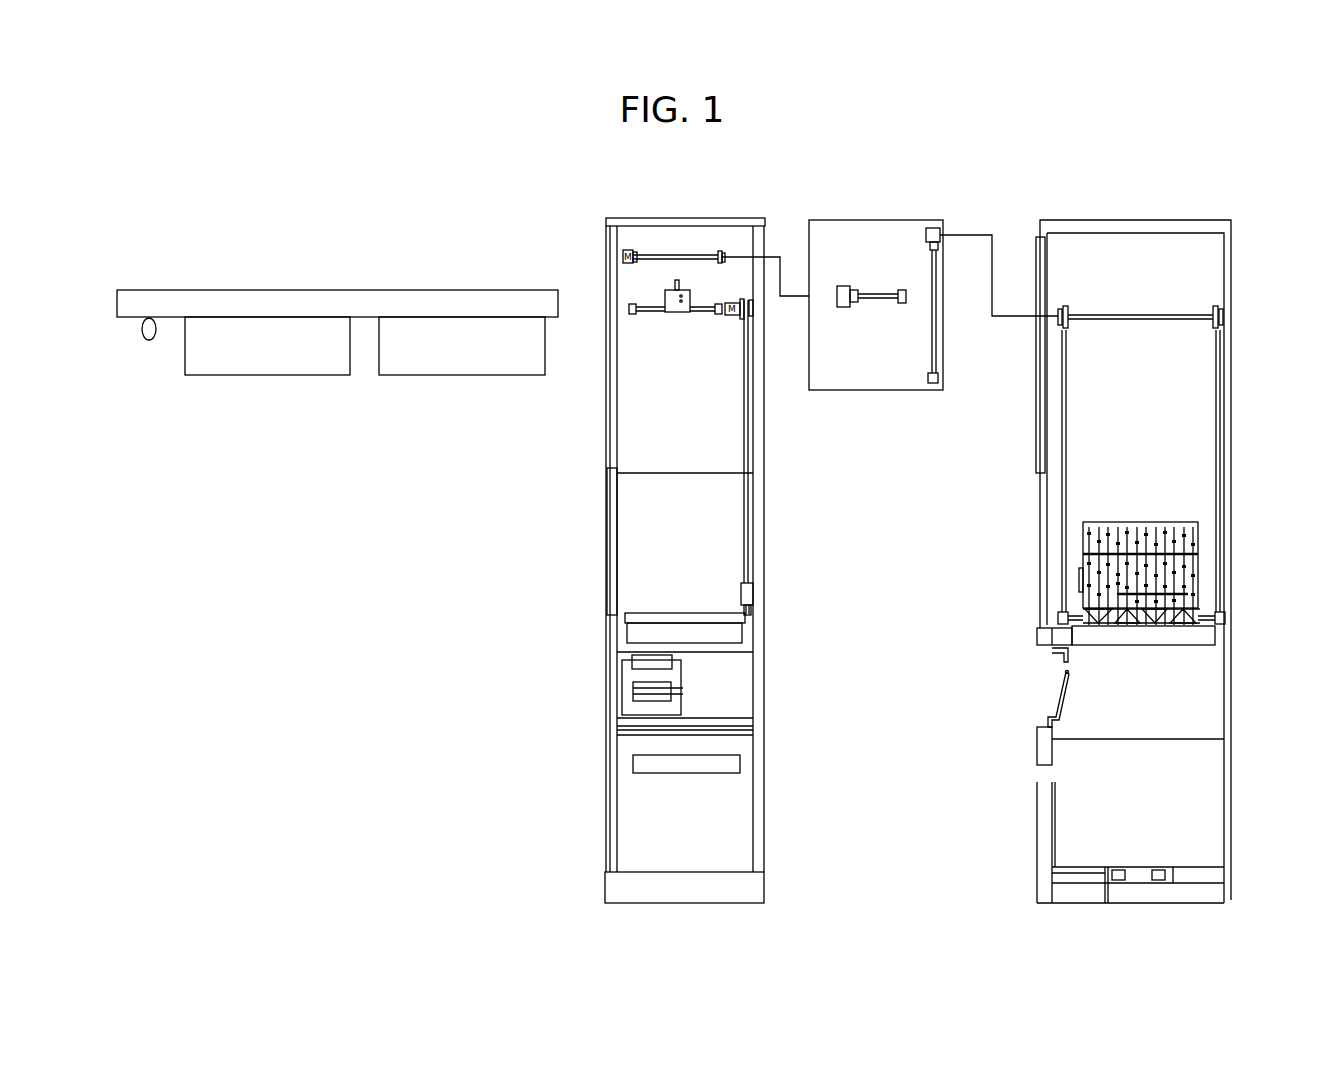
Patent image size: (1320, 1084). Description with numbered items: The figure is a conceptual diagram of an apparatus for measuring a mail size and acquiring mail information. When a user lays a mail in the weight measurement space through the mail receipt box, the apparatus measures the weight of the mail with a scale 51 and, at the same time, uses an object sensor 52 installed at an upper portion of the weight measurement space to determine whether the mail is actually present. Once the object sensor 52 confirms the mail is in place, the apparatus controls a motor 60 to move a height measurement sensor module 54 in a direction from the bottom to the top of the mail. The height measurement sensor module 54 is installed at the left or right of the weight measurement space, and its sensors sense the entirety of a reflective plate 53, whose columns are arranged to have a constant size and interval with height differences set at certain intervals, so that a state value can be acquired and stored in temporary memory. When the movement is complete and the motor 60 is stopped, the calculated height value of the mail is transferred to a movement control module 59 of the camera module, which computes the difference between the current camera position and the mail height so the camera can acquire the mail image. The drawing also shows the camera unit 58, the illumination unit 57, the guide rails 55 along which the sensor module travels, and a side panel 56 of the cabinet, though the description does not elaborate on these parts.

The scale 51 is at (745, 636).
The object sensor 52 is at (149, 341).
The reflective plate 53 is at (1083, 535).
The height measurement sensor module 54 is at (753, 612).
The vertical guide rail 55 is at (748, 425).
The door panel 56 is at (1040, 418).
The illumination unit 57 is at (460, 376).
The camera 58 is at (265, 376).
The movement control module 59 is at (645, 263).
The motor 60 is at (1043, 321).